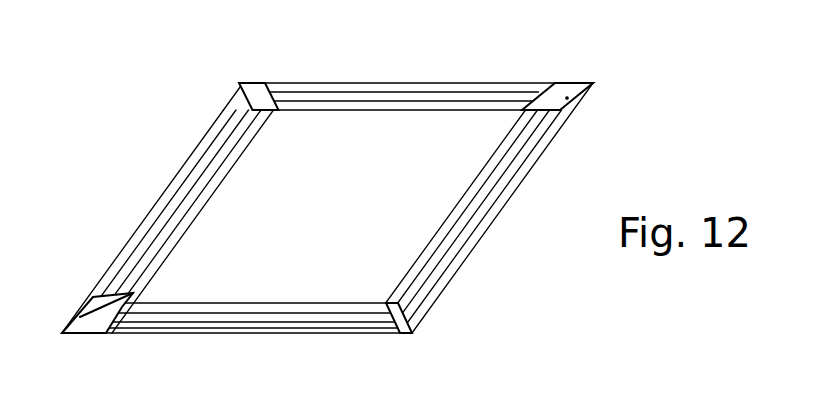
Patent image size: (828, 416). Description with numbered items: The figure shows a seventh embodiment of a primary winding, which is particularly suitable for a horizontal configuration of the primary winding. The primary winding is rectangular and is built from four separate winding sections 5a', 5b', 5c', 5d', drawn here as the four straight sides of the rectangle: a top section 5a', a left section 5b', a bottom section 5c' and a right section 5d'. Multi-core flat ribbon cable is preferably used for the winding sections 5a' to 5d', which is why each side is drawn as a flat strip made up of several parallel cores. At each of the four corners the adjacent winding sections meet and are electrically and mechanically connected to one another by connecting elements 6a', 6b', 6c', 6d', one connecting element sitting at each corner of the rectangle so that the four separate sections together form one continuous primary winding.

The winding section 5a' is at (429, 71).
The winding section 5b' is at (168, 208).
The winding section 5c' is at (250, 344).
The winding section 5d' is at (489, 208).
The connecting element 6a' is at (229, 74).
The connecting element 6b' is at (97, 339).
The connecting element 6c' is at (431, 349).
The connecting element 6d' is at (579, 67).